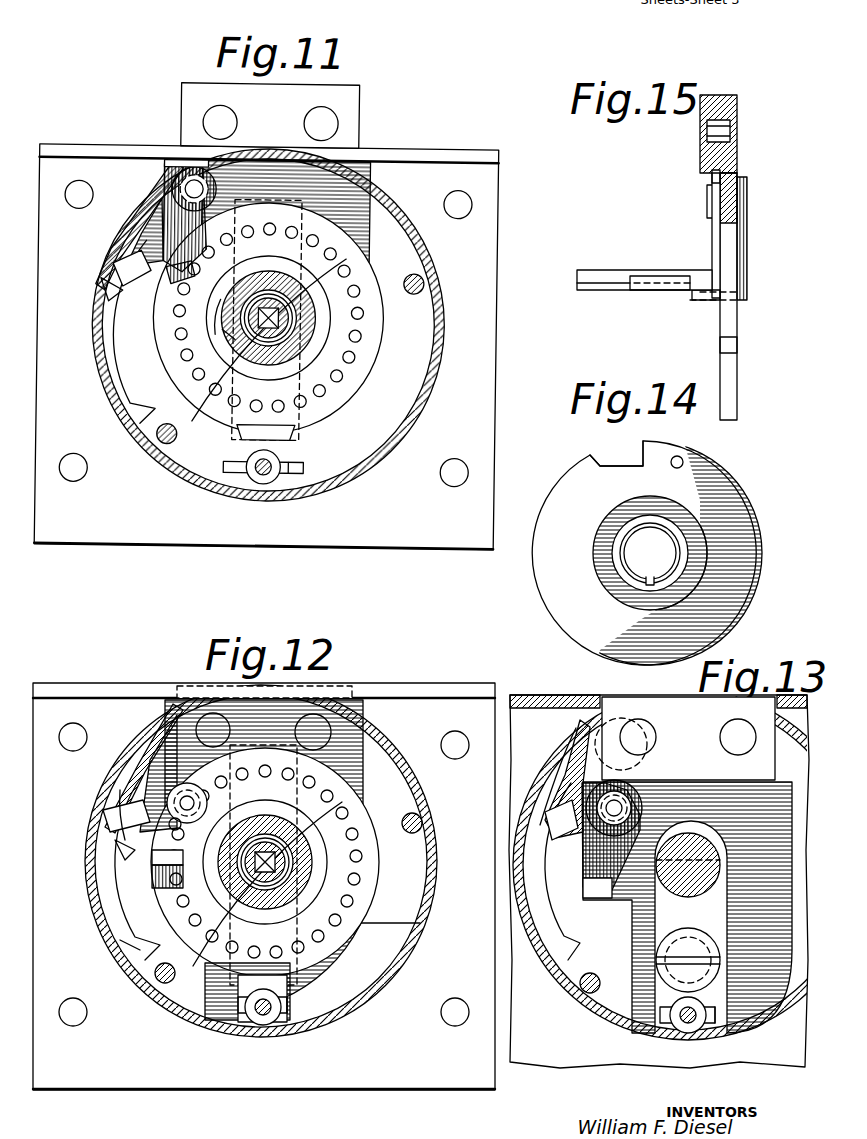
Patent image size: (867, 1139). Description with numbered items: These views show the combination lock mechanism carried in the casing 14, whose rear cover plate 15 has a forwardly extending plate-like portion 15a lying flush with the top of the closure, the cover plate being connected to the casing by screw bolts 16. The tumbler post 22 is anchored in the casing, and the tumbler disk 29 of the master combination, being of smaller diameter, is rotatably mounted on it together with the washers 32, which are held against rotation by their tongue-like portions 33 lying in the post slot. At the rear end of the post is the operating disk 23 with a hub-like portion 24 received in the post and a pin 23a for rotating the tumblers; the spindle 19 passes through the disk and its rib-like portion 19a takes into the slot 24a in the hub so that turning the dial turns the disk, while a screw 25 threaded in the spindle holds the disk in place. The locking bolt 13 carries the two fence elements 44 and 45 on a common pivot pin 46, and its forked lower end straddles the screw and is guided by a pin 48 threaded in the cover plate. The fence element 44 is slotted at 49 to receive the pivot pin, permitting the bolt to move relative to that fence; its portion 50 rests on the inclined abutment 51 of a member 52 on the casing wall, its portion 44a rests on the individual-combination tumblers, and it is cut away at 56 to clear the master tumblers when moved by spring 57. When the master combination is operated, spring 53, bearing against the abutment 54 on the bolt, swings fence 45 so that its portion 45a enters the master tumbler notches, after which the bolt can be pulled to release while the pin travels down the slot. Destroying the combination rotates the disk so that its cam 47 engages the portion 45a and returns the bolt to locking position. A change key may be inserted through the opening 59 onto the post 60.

In FIG. 11, the locking bolt 13 is at (357, 137).
In FIG. 12, the locking bolt 13 is at (248, 724).
In FIG. 13, the locking bolt 13 is at (682, 716).
In FIG. 15, the locking bolt 13 is at (728, 170).
In FIG. 11, the casing 14 is at (372, 457).
In FIG. 12, the casing 14 is at (440, 860).
In FIG. 13, the casing 14 is at (616, 1024).
In FIG. 11, the rear cover plate 15 is at (488, 360).
In FIG. 12, the rear cover plate 15 is at (92, 1106).
In FIG. 13, the rear cover plate 15 is at (548, 1058).
In FIG. 11, the forwardly extending plate-like portion 15a is at (466, 152).
In FIG. 12, the forwardly extending plate-like portion 15a is at (404, 700).
In FIG. 11, the screw bolts 16 is at (423, 281).
In FIG. 12, the screw bolts 16 is at (423, 822).
In FIG. 13, the screw bolts 16 is at (582, 992).
In FIG. 11, the spindle 19 is at (266, 292).
In FIG. 12, the spindle 19 is at (265, 838).
In FIG. 11, the rib-like portion 19a is at (220, 322).
In FIG. 12, the rib-like portion 19a is at (212, 842).
In FIG. 11, the tumbler post 22 is at (215, 406).
In FIG. 12, the tumbler post 22 is at (312, 900).
In FIG. 11, the operating disk 23 is at (222, 318).
In FIG. 14, the operating disk 23 is at (553, 583).
In FIG. 14, the pin 23a is at (688, 460).
In FIG. 14, the hub-like portion 24 is at (662, 522).
In FIG. 14, the slot 24a is at (651, 578).
In FIG. 13, the screw 25 is at (686, 897).
In FIG. 11, the tumbler disk 29 is at (352, 253).
In FIG. 12, the tumbler disk 29 is at (370, 845).
In FIG. 11, the washers 32 is at (327, 330).
In FIG. 12, the washers 32 is at (318, 880).
In FIG. 11, the tongue-like portions 33 is at (228, 339).
In FIG. 12, the tongue-like portions 33 is at (220, 862).
In FIG. 11, the fence element 44 is at (148, 217).
In FIG. 12, the fence element 44 is at (150, 742).
In FIG. 13, the fence element 44 is at (565, 762).
In FIG. 15, the fence element 44 is at (750, 245).
In FIG. 11, the portion of fence element 44a is at (124, 298).
In FIG. 12, the portion of fence element 44a is at (110, 816).
In FIG. 13, the portion of fence element 44a is at (568, 842).
In FIG. 15, the portion of fence element 44a is at (592, 272).
In FIG. 11, the fence element 45 is at (160, 233).
In FIG. 13, the fence element 45 is at (622, 845).
In FIG. 15, the fence element 45 is at (712, 240).
In FIG. 11, the portion of fence 45a is at (130, 300).
In FIG. 12, the portion of fence 45a is at (165, 880).
In FIG. 13, the portion of fence 45a is at (600, 892).
In FIG. 15, the portion of fence 45a is at (692, 297).
In FIG. 11, the common pivot pin 46 is at (208, 190).
In FIG. 12, the common pivot pin 46 is at (196, 800).
In FIG. 13, the common pivot pin 46 is at (630, 806).
In FIG. 15, the common pivot pin 46 is at (706, 203).
In FIG. 12, the cam 47 is at (120, 945).
In FIG. 14, the cam 47 is at (592, 455).
In FIG. 11, the pin 48 is at (297, 433).
In FIG. 12, the pin 48 is at (215, 995).
In FIG. 13, the pin 48 is at (656, 958).
In FIG. 11, the slot 49 is at (244, 228).
In FIG. 12, the slot 49 is at (240, 770).
In FIG. 13, the slot 49 is at (648, 750).
In FIG. 15, the portion of fence 50 is at (714, 302).
In FIG. 11, the inclined abutment 51 is at (103, 287).
In FIG. 12, the inclined abutment 51 is at (120, 838).
In FIG. 11, the member 52 is at (120, 386).
In FIG. 12, the member 52 is at (100, 892).
In FIG. 13, the member 52 is at (556, 958).
In FIG. 11, the spring 53 is at (170, 163).
In FIG. 12, the spring 53 is at (140, 765).
In FIG. 13, the spring 53 is at (558, 775).
In FIG. 11, the abutment 54 is at (212, 172).
In FIG. 12, the abutment 54 is at (187, 803).
In FIG. 13, the abutment 54 is at (632, 800).
In FIG. 15, the abutment 54 is at (700, 172).
In FIG. 15, the cut away portion 56 is at (643, 278).
In FIG. 11, the spring 57 is at (116, 263).
In FIG. 12, the spring 57 is at (132, 790).
In FIG. 11, the opening 59 is at (298, 472).
In FIG. 12, the opening 59 is at (282, 1015).
In FIG. 13, the opening 59 is at (710, 1018).
In FIG. 11, the post 60 is at (264, 480).
In FIG. 12, the post 60 is at (258, 1022).
In FIG. 13, the post 60 is at (688, 1026).